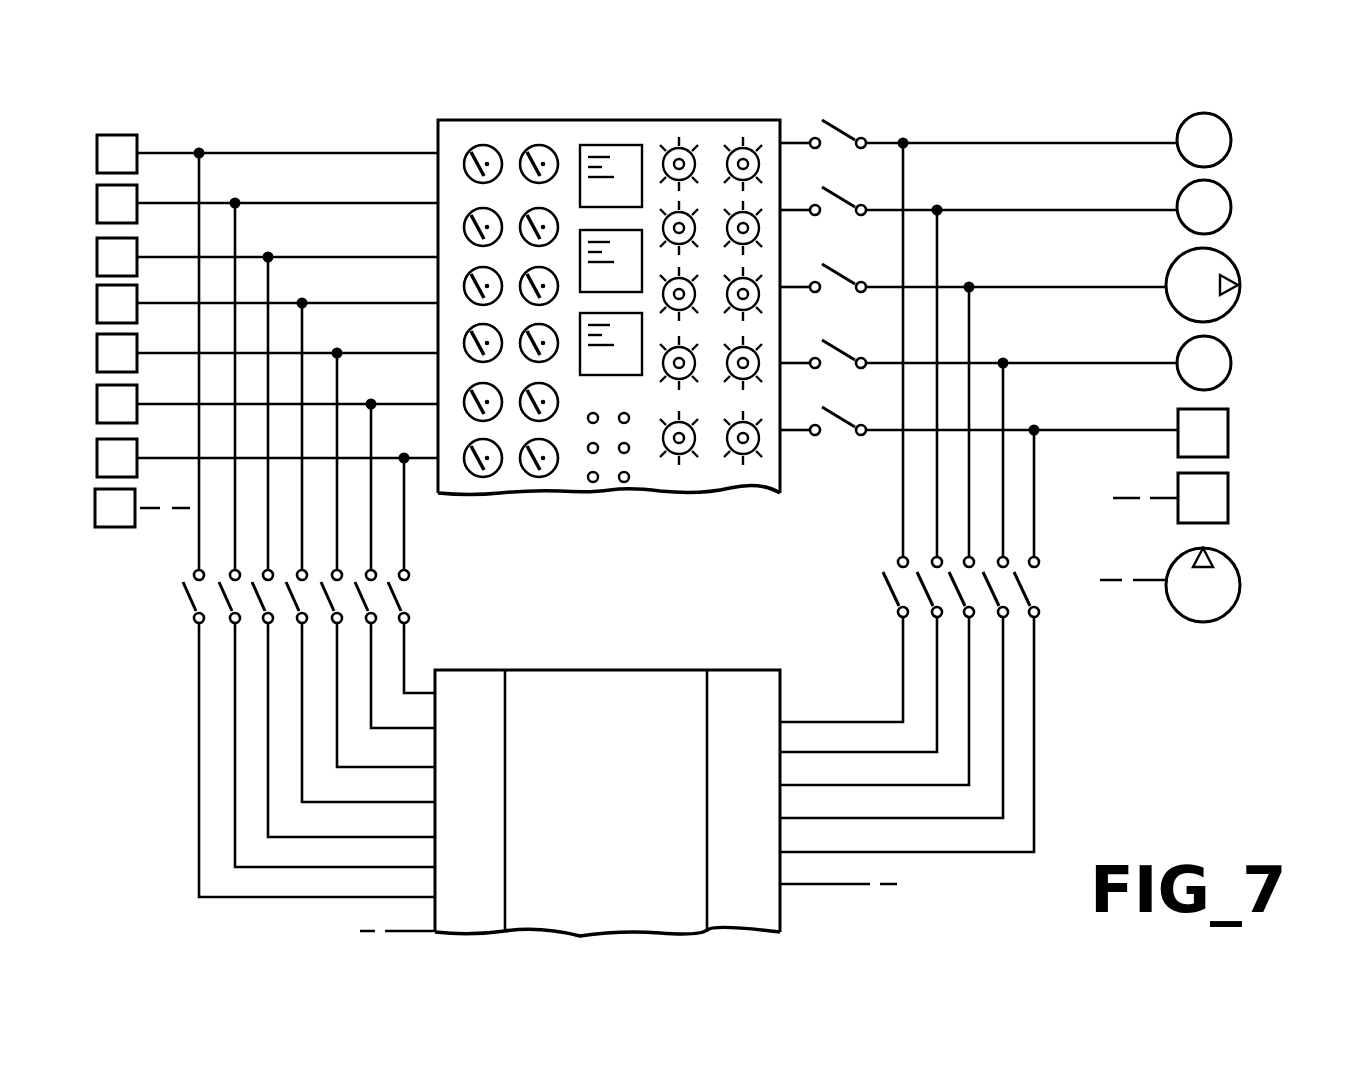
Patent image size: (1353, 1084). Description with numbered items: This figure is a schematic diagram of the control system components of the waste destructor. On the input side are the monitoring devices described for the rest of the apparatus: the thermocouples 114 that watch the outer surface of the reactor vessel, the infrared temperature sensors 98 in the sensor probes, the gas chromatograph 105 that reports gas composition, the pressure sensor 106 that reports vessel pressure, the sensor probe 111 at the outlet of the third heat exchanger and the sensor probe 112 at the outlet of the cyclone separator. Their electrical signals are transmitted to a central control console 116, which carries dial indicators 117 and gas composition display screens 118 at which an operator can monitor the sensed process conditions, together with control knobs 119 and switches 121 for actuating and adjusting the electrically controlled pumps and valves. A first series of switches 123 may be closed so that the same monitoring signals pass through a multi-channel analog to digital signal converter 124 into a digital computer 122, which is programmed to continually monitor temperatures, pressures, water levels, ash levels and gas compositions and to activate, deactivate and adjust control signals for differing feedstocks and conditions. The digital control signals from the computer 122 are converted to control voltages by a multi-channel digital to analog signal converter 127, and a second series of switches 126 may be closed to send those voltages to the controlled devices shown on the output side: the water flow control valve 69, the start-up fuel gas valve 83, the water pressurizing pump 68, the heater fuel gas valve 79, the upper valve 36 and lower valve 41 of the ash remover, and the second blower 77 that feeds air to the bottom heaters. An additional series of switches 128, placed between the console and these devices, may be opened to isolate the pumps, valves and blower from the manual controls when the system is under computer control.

The thermocouples 114 is at (95, 155).
The temperature sensor 98 is at (95, 203).
The gas chromatograph 105 is at (95, 257).
The pressure sensor 106 is at (95, 354).
The sensor probe 111 is at (95, 458).
The sensor probe 112 is at (93, 510).
The control console 116 is at (569, 329).
The dial indicators 117 is at (507, 472).
The gas composition display screens 118 is at (628, 136).
The control knobs 119 is at (716, 460).
The switches 121 is at (612, 486).
The digital computer 122 is at (607, 775).
The first series of switches 123 is at (418, 592).
The multi-channel analog to digital signal converter 124 is at (473, 670).
The second series of switches 126 is at (878, 591).
The multi-channel digital to analog signal converter 127 is at (740, 672).
The additional series of switches 128 is at (838, 455).
The flow control valve 69 is at (1232, 137).
The flow control valve 83 is at (1232, 200).
The pump 68 is at (1240, 268).
The flow control valve 79 is at (1232, 357).
The upper valve 36 is at (1230, 430).
The lower valve 41 is at (1230, 495).
The second blower 77 is at (1240, 568).